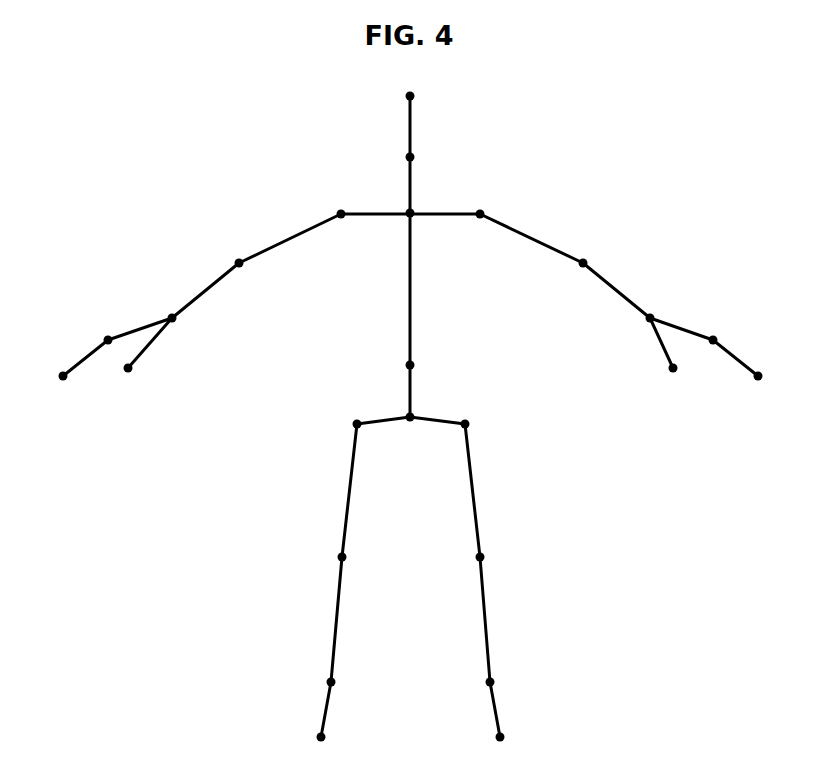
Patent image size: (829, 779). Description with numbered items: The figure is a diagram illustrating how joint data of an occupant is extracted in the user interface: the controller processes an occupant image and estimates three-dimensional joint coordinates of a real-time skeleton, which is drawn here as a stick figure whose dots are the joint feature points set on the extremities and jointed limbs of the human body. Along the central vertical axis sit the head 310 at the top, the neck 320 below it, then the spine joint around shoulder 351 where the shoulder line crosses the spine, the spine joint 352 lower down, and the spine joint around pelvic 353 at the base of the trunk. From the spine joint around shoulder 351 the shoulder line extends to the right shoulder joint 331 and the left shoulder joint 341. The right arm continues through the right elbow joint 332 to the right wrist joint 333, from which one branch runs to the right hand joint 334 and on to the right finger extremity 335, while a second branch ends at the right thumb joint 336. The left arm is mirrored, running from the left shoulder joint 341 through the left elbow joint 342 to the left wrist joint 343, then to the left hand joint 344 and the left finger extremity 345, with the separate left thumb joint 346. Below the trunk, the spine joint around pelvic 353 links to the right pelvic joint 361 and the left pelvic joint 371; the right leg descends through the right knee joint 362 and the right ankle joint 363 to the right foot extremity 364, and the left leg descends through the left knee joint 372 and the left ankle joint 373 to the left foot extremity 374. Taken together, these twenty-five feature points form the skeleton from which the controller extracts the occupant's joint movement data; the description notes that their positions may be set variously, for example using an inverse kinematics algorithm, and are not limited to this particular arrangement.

The head 310 is at (414, 95).
The neck 320 is at (414, 156).
The right shoulder joint 331 is at (338, 213).
The right elbow joint 332 is at (236, 262).
The right wrist joint 333 is at (169, 317).
The right hand joint 334 is at (105, 339).
The right finger extremity 335 is at (64, 380).
The right thumb joint 336 is at (129, 372).
The left shoulder joint 341 is at (483, 213).
The left elbow joint 342 is at (586, 262).
The left wrist joint 343 is at (653, 317).
The left hand joint 344 is at (716, 339).
The left finger extremity 345 is at (757, 380).
The left thumb joint 346 is at (672, 372).
The spine joint around shoulder 351 is at (412, 217).
The spine joint 352 is at (414, 364).
The spine joint around pelvic 353 is at (408, 414).
The right pelvic joint 361 is at (354, 424).
The right knee joint 362 is at (339, 557).
The right ankle joint 363 is at (328, 682).
The right foot extremity 364 is at (318, 737).
The left pelvic joint 371 is at (468, 424).
The left knee joint 372 is at (483, 557).
The left ankle joint 373 is at (493, 682).
The left foot extremity 374 is at (503, 737).